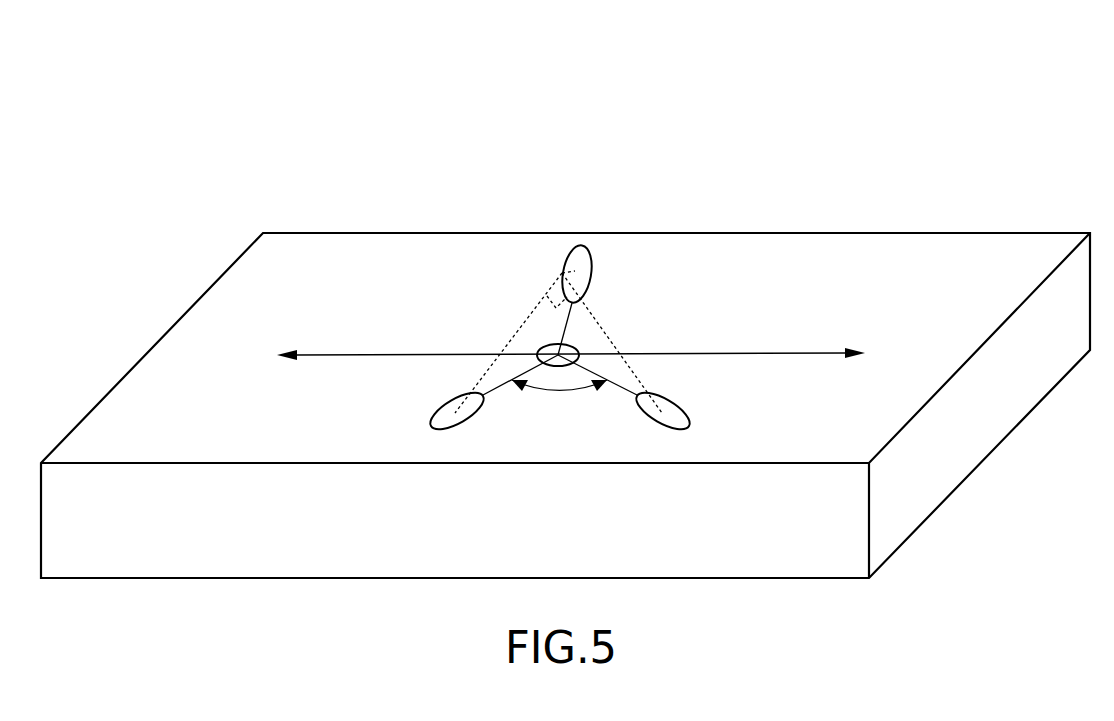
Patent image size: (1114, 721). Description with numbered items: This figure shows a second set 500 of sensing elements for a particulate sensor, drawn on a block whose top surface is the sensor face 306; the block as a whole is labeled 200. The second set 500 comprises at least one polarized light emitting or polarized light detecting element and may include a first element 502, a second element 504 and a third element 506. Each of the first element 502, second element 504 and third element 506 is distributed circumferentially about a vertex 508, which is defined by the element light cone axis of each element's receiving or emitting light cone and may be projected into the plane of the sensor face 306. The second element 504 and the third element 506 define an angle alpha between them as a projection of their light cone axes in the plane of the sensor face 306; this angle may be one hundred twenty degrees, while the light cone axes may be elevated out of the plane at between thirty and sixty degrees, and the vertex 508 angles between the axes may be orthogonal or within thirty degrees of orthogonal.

The imaging system 200 is at (1003, 78).
The sensor face 306 is at (957, 245).
The second set of sensing elements 500 is at (699, 181).
The first element 502 is at (591, 268).
The second element 504 is at (693, 420).
The third element 506 is at (432, 413).
The vertex 508 is at (560, 273).